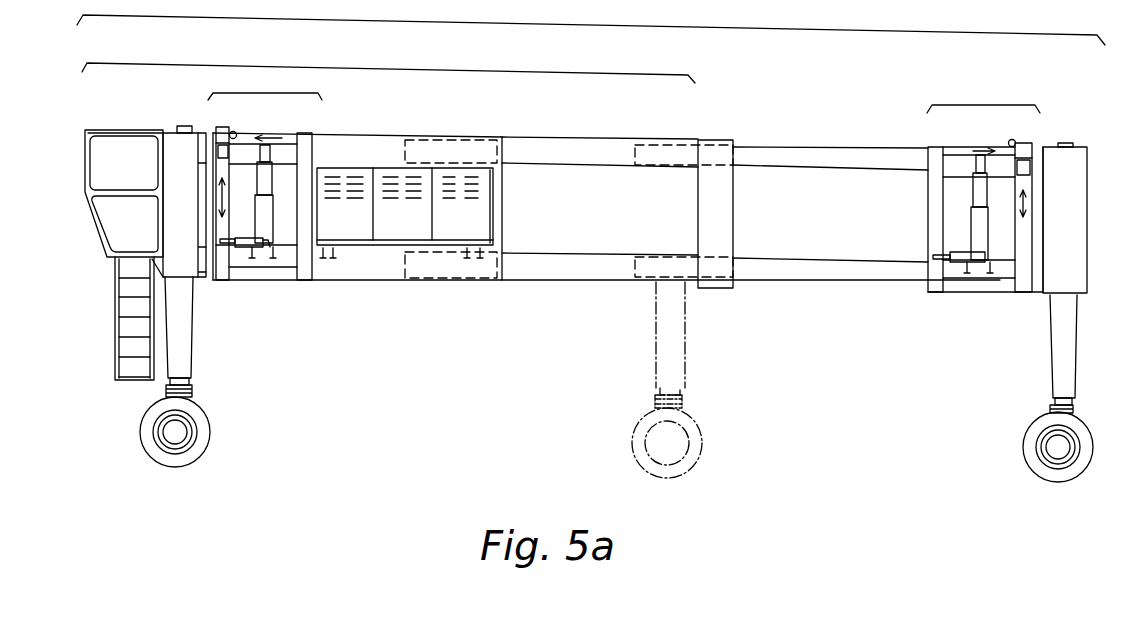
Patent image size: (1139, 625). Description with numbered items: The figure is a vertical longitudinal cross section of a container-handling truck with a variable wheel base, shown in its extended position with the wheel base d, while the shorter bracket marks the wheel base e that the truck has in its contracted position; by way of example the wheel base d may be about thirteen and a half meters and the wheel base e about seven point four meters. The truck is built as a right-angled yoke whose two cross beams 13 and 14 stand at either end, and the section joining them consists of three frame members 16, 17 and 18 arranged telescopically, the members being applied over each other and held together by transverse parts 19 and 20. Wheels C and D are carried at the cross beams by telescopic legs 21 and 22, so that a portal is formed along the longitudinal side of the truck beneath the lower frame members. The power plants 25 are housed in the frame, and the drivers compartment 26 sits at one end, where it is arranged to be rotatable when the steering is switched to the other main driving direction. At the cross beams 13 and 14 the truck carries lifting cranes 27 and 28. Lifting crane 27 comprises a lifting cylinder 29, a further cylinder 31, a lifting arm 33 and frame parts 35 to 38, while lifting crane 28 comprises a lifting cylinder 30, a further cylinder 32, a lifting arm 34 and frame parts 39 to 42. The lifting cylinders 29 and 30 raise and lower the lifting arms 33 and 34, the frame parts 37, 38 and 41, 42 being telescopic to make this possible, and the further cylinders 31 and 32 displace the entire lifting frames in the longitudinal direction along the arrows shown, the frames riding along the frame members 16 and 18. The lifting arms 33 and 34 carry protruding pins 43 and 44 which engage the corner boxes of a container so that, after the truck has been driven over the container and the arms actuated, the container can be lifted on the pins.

The cross beam 13 is at (1073, 167).
The cross beam 14 is at (178, 145).
The frame member 16 is at (390, 145).
The frame member 17 is at (590, 150).
The frame member 18 is at (812, 158).
The transverse part 19 is at (717, 205).
The transverse part 20 is at (502, 192).
The telescopic leg 21 is at (1058, 358).
The telescopic leg 22 is at (185, 335).
The power plants 25 is at (433, 217).
The drivers compartment 26 is at (100, 165).
The lifting crane 27 is at (265, 84).
The lifting crane 28 is at (983, 96).
The lifting cylinder 29 is at (287, 225).
The lifting cylinder 30 is at (977, 223).
The further cylinder 31 is at (245, 248).
The further cylinder 32 is at (958, 262).
The lifting arm 33 is at (220, 125).
The lifting arm 34 is at (1028, 142).
The frame part 35 is at (955, 149).
The frame part 36 is at (975, 288).
The frame part 37 is at (937, 187).
The frame part 38 is at (1027, 290).
The frame part 39 is at (288, 143).
The frame part 40 is at (242, 268).
The frame part 41 is at (307, 160).
The frame part 42 is at (216, 176).
The protruding pin 43 is at (235, 133).
The protruding pin 44 is at (1010, 141).
The wheel C is at (693, 443).
The wheel D is at (205, 432).
The wheel base d is at (591, 22).
The wheel base e is at (388, 61).